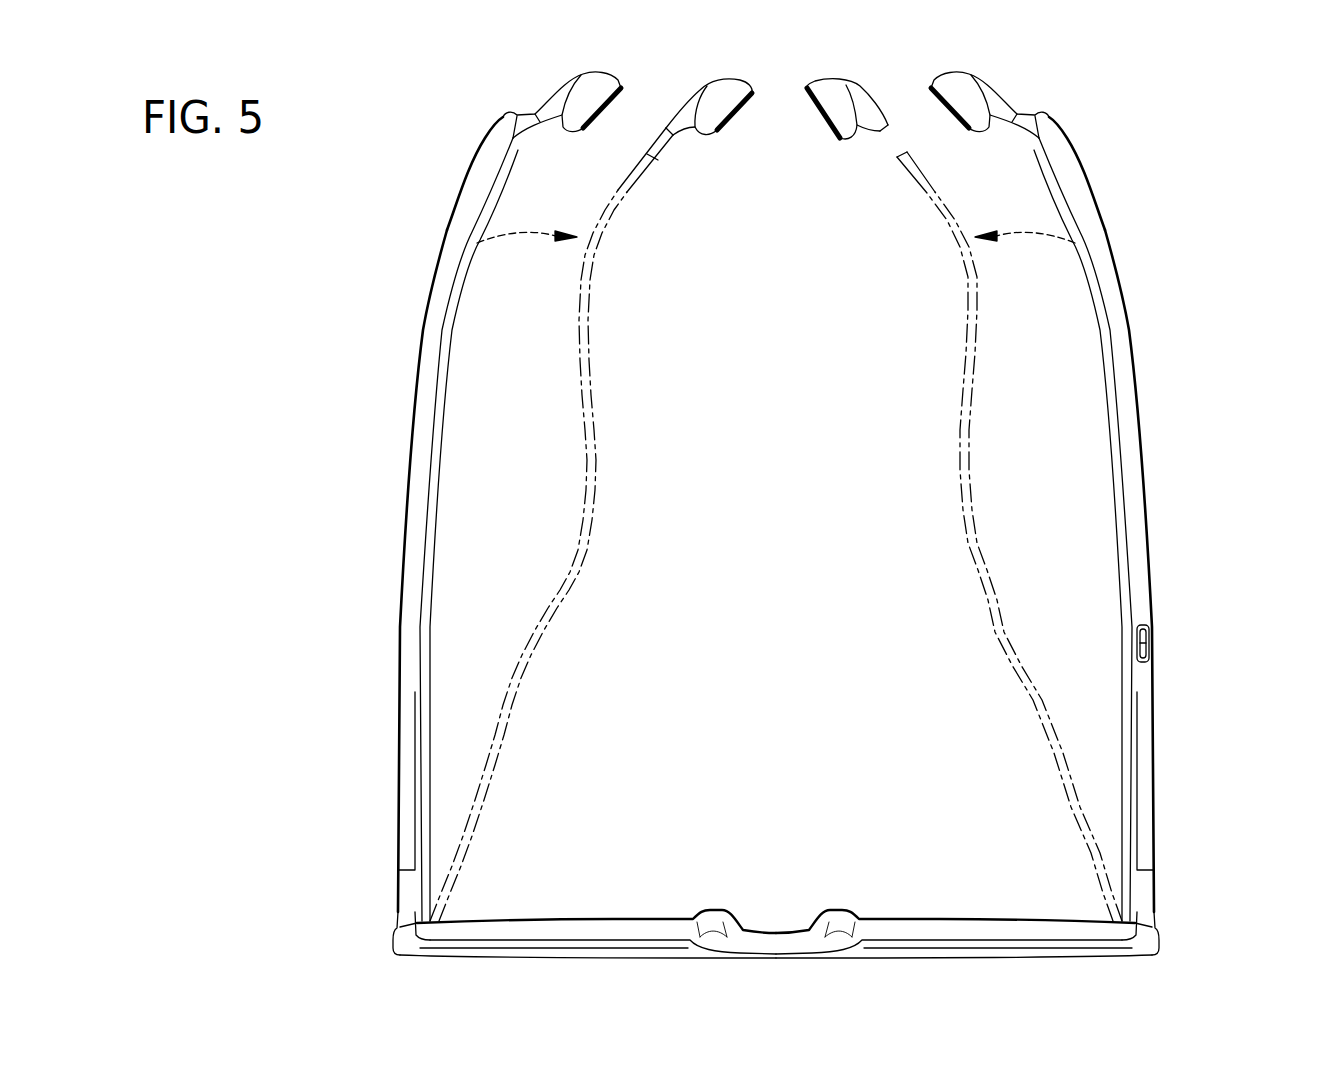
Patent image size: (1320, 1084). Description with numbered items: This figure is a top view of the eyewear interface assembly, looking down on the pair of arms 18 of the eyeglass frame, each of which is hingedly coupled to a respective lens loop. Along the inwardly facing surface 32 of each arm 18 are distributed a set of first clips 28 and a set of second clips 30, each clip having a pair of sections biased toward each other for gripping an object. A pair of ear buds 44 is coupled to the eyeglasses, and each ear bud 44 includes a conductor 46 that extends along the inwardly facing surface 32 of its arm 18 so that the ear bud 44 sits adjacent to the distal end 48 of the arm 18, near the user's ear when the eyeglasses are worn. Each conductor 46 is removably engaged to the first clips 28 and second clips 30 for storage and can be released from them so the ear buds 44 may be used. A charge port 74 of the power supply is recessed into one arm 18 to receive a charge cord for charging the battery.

The arm 18 is at (408, 528).
The first clip 28 is at (493, 174).
The second clip 30 is at (1057, 178).
The inwardly facing surface 32 is at (423, 553).
The ear bud 44 is at (604, 85).
The conductor 46 is at (430, 497).
The distal end 48 is at (509, 116).
The charge port 74 is at (1150, 632).